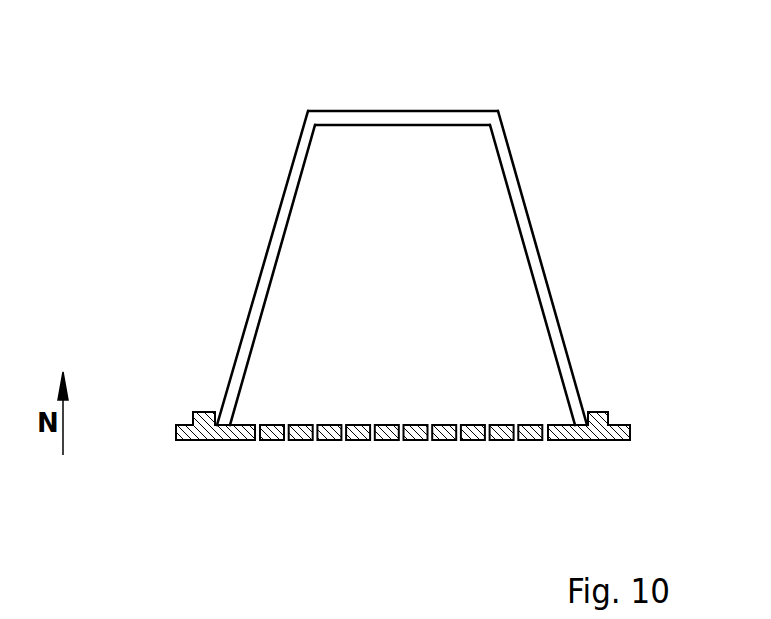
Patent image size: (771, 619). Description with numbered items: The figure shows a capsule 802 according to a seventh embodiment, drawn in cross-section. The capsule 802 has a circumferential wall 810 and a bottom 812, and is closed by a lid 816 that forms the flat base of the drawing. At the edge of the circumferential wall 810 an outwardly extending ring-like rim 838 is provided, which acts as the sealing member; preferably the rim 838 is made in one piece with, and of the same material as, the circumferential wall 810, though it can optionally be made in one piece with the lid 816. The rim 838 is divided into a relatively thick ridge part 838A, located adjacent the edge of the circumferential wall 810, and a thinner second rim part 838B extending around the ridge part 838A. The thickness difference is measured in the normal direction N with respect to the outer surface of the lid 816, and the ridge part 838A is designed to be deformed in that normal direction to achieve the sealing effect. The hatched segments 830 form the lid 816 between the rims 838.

The capsule 802 is at (541, 116).
The circumferential wall 810 is at (535, 264).
The bottom 812 is at (452, 120).
The lid 816 is at (402, 406).
The floor segments 830 is at (395, 450).
The rim 838 is at (402, 406).
The ridge part 838A is at (196, 396).
The second rim part 838B is at (167, 412).